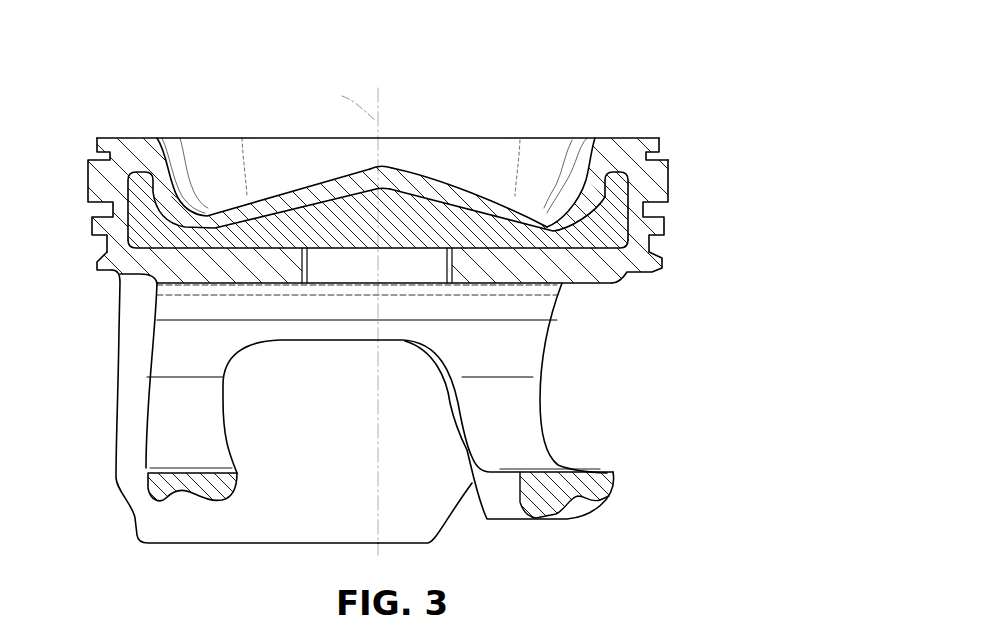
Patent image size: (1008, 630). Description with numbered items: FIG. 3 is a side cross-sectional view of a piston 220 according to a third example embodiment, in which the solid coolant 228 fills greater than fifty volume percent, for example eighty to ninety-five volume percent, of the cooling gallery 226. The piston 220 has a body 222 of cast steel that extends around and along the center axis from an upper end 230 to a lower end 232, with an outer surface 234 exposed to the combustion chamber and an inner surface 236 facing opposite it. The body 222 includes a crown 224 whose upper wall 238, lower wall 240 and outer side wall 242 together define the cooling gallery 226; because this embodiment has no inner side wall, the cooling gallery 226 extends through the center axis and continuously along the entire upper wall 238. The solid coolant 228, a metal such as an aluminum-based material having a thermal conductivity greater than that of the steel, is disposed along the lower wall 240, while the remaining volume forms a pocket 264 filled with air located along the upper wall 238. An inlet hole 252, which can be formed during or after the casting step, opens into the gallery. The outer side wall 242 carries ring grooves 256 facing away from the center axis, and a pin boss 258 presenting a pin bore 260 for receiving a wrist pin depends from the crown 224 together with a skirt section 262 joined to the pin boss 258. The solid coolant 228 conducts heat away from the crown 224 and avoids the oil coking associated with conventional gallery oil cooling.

The piston 220 is at (404, 332).
The body 222 is at (663, 264).
The crown 224 is at (698, 176).
The cooling gallery 226 is at (372, 207).
The solid coolant 228 is at (415, 186).
The upper end 230 is at (112, 138).
The lower end 232 is at (172, 545).
The outer surface 234 is at (468, 182).
The inner surface 236 is at (548, 228).
The upper wall 238 is at (386, 162).
The lower wall 240 is at (583, 277).
The outer side wall 242 is at (117, 183).
The inlet hole 252 is at (327, 272).
The ring grooves 256 is at (663, 160).
The pin boss 258 is at (590, 497).
The pin bore 260 is at (525, 433).
The skirt section 262 is at (415, 513).
The pocket 264 is at (617, 177).